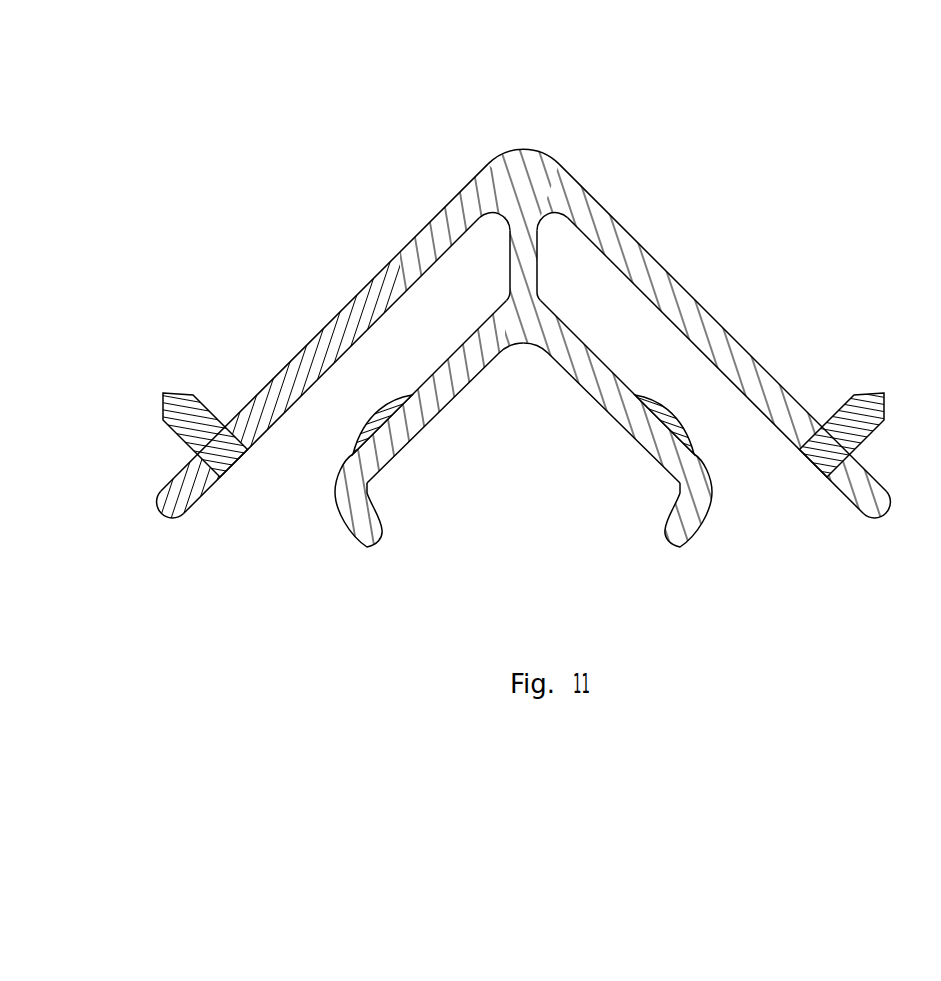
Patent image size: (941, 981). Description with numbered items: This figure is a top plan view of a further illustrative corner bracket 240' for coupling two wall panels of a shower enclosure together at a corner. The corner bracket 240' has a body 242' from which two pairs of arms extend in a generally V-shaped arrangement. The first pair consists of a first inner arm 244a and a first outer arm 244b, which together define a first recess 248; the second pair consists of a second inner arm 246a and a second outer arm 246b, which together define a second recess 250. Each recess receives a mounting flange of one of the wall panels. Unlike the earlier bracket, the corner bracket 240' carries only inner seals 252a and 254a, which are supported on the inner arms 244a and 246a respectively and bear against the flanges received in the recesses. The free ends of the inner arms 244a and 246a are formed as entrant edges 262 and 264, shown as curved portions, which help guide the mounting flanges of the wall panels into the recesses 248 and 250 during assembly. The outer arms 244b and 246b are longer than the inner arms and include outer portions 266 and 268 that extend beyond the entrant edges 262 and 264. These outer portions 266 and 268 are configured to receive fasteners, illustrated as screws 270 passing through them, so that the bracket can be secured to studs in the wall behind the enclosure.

The corner bracket 240' is at (524, 305).
The body 242' is at (523, 113).
The first inner arm 244a is at (402, 442).
The second outer arm 244b is at (330, 337).
The second inner arm 246a is at (598, 380).
The second outer arm 246b is at (707, 330).
The first recess 248 is at (433, 307).
The second recess 250 is at (608, 278).
The inner seal 252a is at (352, 438).
The inner seal 254a is at (688, 430).
The entrant edge 262 is at (366, 534).
The entrant edge 264 is at (682, 536).
The outer portion 266 is at (167, 503).
The outer portion 268 is at (878, 503).
The screw 270 is at (178, 390).